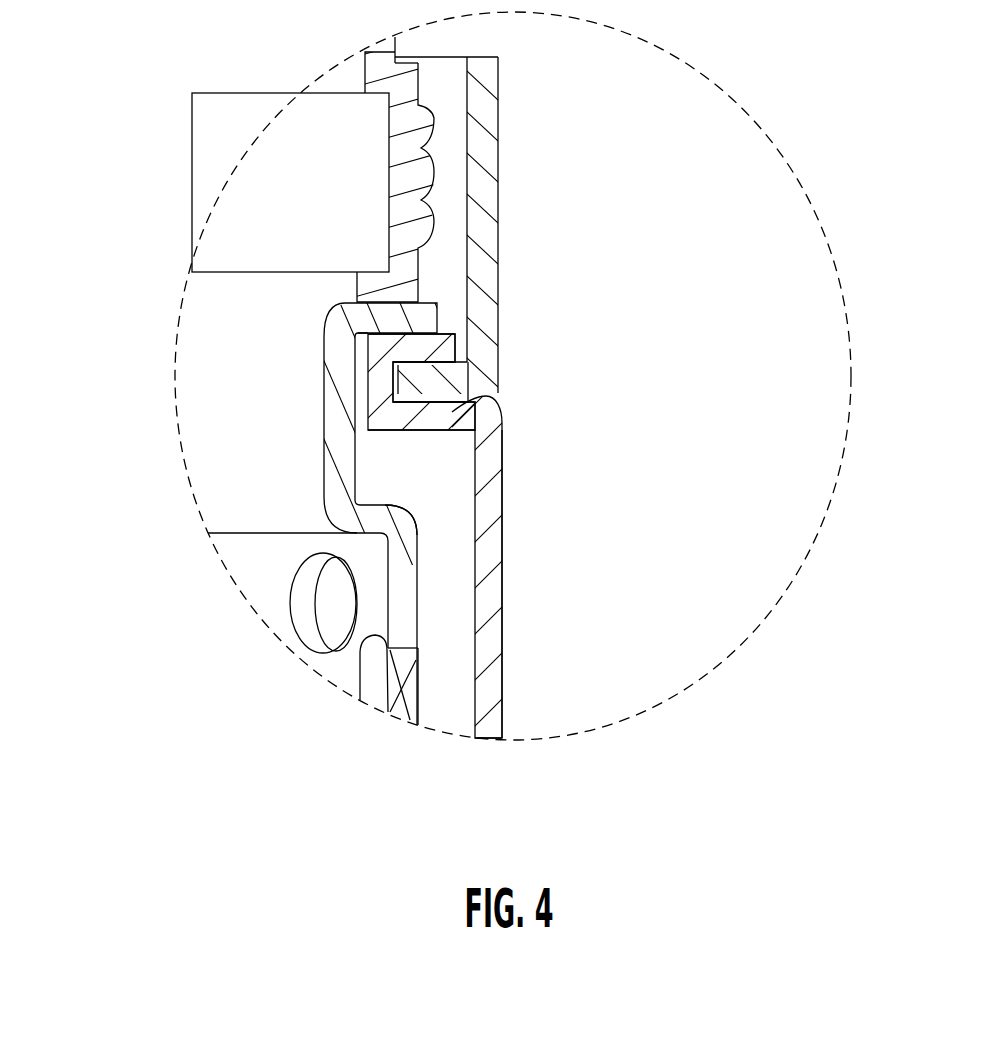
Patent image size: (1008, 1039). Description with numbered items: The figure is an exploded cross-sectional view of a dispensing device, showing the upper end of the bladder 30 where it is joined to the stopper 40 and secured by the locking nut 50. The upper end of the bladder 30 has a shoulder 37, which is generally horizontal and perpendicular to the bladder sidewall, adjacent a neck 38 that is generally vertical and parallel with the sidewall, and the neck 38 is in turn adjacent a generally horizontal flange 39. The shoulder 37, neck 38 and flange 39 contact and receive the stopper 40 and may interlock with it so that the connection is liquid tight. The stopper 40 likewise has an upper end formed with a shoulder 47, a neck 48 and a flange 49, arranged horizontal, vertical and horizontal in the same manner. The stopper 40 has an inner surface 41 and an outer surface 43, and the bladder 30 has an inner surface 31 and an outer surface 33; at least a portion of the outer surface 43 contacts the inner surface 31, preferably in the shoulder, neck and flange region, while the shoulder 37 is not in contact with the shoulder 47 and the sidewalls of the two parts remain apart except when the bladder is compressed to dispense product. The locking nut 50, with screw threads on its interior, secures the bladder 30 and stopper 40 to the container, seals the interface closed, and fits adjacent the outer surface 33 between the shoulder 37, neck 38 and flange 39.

The bladder 30 is at (490, 740).
The inner surface 31 is at (477, 602).
The outer surface 33 is at (503, 648).
The shoulder 37 is at (398, 394).
The neck 38 is at (380, 379).
The flange 39 is at (443, 349).
The stopper 40 is at (411, 712).
The inner surface 41 is at (376, 636).
The outer surface 43 is at (422, 690).
The shoulder 47 is at (378, 522).
The neck 48 is at (337, 440).
The flange 49 is at (365, 317).
The locking nut 50 is at (528, 164).